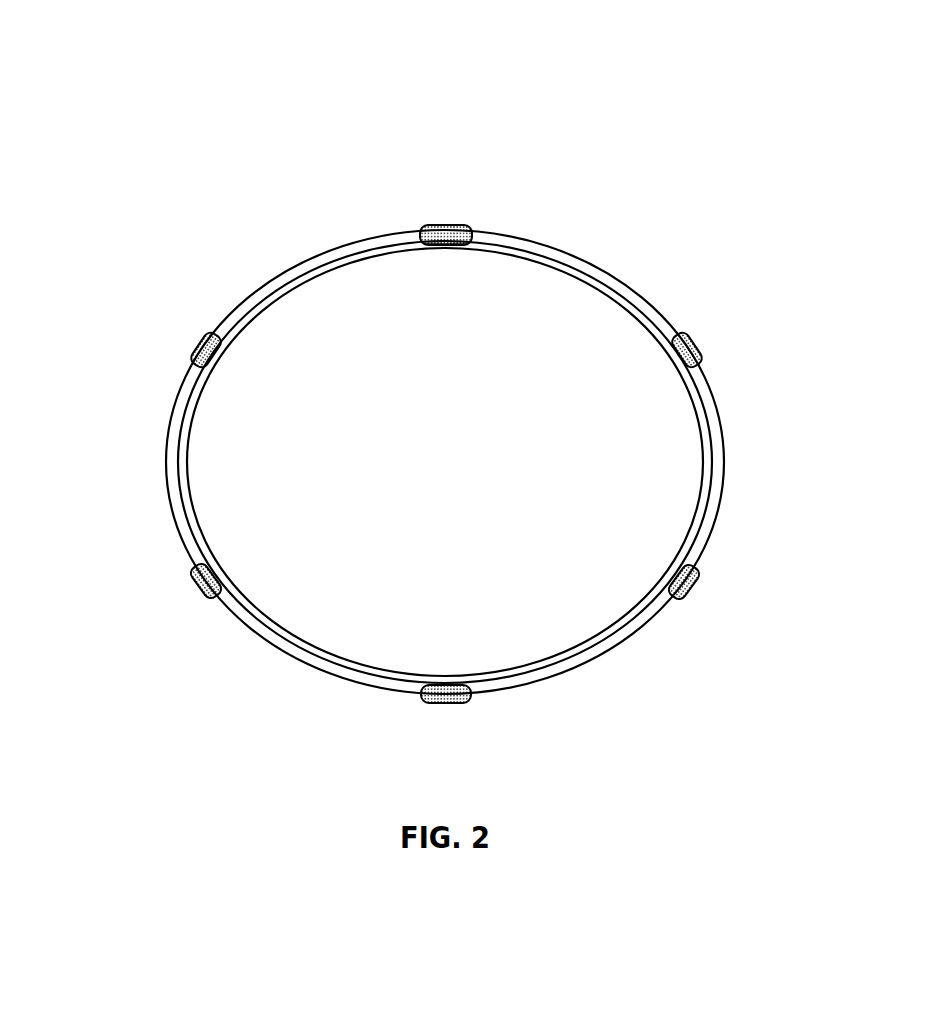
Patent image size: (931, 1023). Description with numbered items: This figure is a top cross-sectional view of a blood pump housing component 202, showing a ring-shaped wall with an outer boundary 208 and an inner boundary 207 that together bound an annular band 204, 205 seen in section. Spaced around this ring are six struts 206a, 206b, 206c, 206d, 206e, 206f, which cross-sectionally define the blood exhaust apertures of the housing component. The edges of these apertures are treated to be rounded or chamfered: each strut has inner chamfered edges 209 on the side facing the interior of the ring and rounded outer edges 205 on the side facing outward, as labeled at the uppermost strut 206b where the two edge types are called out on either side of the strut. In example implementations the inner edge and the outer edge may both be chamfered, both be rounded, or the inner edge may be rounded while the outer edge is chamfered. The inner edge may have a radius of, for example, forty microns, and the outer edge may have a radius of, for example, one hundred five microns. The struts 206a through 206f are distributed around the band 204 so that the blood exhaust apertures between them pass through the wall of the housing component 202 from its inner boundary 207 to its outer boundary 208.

The electrode ring assembly 202 is at (168, 90).
The annular band 204 is at (301, 270).
The rounded outer edge 205 is at (422, 230).
The strut 206a is at (197, 348).
The strut 206b is at (448, 228).
The strut 206c is at (700, 340).
The strut 206d is at (690, 585).
The strut 206e is at (441, 706).
The strut 206f is at (195, 578).
The inner edge of ring 207 is at (188, 473).
The outer edge of ring 208 is at (167, 465).
The inner chamfered edge 209 is at (432, 248).